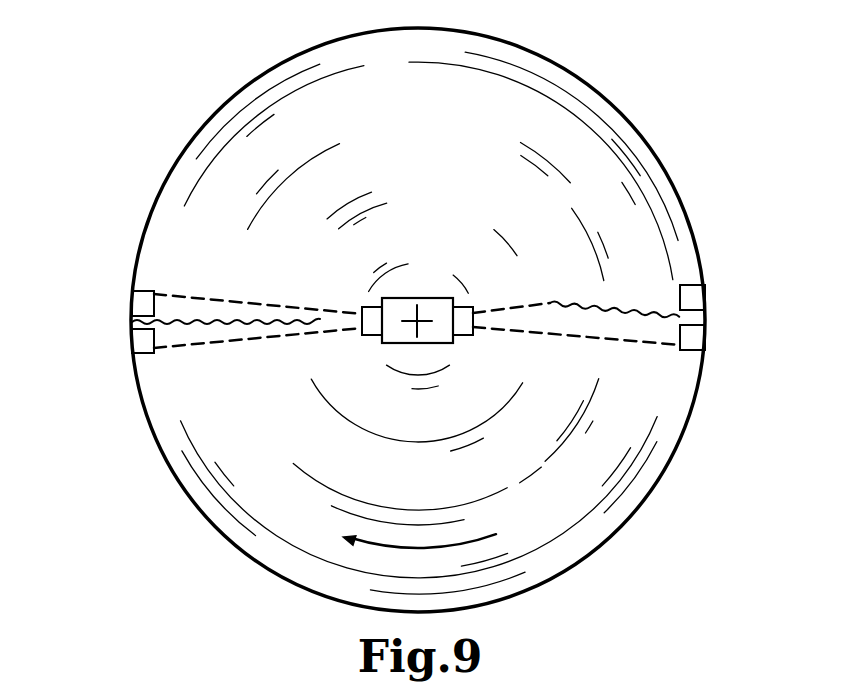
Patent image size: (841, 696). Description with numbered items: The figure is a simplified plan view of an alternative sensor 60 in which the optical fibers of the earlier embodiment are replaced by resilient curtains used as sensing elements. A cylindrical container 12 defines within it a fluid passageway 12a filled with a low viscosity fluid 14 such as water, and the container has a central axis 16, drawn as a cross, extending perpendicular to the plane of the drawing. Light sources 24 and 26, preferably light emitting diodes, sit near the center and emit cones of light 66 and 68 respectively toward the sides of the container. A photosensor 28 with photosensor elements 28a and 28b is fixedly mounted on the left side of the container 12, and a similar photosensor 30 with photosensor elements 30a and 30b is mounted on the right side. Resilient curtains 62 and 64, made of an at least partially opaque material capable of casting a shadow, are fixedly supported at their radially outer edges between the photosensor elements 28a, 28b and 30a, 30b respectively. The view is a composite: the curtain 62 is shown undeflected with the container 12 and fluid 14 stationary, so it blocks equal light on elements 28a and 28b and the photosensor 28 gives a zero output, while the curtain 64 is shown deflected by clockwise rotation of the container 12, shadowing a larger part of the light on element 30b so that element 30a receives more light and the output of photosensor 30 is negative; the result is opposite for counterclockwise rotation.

The cylindrical container 12 is at (228, 97).
The fluid passageway 12a is at (565, 138).
The low viscosity fluid 14 is at (430, 158).
The central axis 16 is at (421, 324).
The light source 24 is at (373, 334).
The light source 26 is at (463, 334).
The photosensor 28 is at (90, 283).
The photosensor element 28a is at (135, 305).
The photosensor element 28b is at (135, 340).
The photosensor 30 is at (738, 281).
The photosensor element 30a is at (697, 340).
The photosensor element 30b is at (697, 298).
The sensor 60 is at (130, 128).
The resilient curtain 62 is at (282, 323).
The resilient curtain 64 is at (550, 303).
The cone of light 66 is at (197, 347).
The cone of light 68 is at (633, 345).